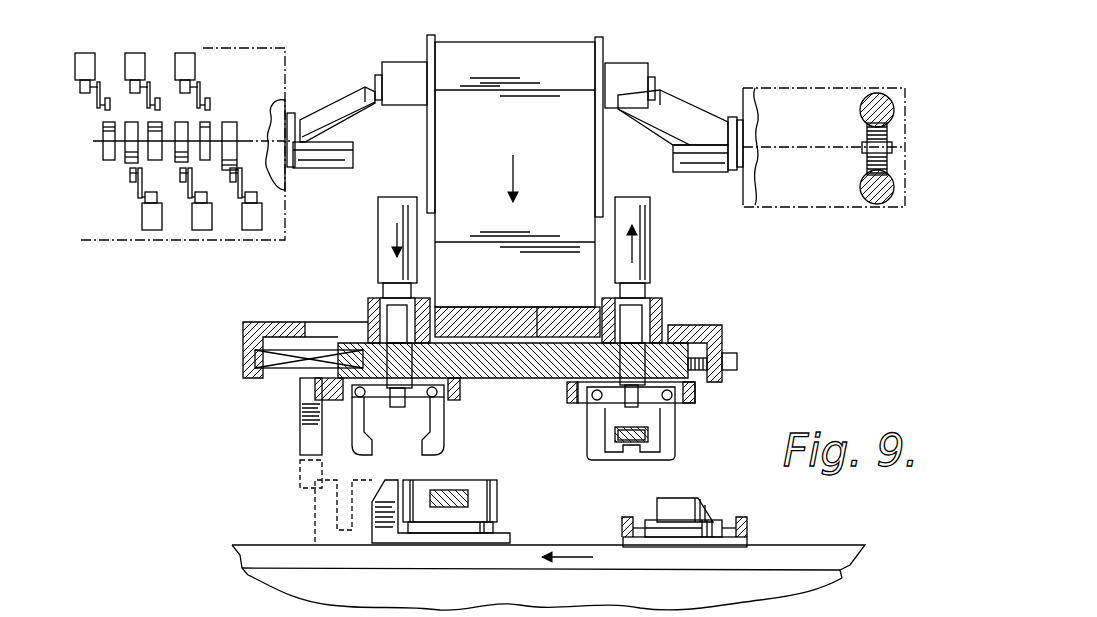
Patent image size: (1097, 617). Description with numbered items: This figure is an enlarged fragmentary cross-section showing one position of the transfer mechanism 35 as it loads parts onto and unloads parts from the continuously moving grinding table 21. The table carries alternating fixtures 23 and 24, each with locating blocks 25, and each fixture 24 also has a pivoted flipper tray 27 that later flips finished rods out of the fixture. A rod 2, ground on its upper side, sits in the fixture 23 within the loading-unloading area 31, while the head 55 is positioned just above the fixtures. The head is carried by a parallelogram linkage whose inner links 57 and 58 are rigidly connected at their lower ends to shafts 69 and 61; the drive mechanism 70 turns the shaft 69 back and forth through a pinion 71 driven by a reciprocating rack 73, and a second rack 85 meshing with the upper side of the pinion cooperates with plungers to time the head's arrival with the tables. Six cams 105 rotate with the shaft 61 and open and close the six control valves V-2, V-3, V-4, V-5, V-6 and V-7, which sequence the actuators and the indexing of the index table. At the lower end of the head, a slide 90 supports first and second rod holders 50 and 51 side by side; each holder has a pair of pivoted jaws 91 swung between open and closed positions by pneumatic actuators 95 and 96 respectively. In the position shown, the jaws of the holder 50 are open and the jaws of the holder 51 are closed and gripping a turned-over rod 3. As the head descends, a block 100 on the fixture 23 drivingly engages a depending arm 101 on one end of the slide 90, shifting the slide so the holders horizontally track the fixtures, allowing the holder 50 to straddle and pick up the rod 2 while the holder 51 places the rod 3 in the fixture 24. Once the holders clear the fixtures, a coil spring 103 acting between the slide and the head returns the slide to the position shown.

The control valve V-2 is at (83, 53).
The control valve V-4 is at (135, 53).
The control valve V-6 is at (185, 53).
The control valve V-3 is at (151, 230).
The control valve V-5 is at (201, 230).
The control valve V-7 is at (252, 230).
The cams 105 is at (205, 122).
The shaft 61 is at (243, 140).
The head 55 is at (520, 136).
The inner link 58 is at (372, 133).
The inner link 57 is at (670, 138).
The drive mechanism 70 is at (845, 124).
The rack 85 is at (888, 102).
The pinion 71 is at (890, 135).
The rack 73 is at (892, 183).
The shaft 69 is at (783, 148).
The pneumatic actuator 95 is at (380, 242).
The pneumatic actuator 96 is at (650, 233).
The slide 90 is at (543, 350).
The transfer mechanism 35 is at (708, 313).
The coil spring 103 is at (275, 372).
The depending arm 101 is at (302, 420).
The rod holder 50 is at (476, 433).
The jaws 91 is at (444, 425).
The rod holder 51 is at (690, 413).
The rod 3 is at (650, 433).
The rod 2 is at (558, 484).
The loading-unloading area 31 is at (558, 455).
The fixture 23 is at (508, 493).
The locating blocks 25 is at (500, 522).
The fixture 24 is at (711, 515).
The flipper tray 27 is at (747, 530).
The grinding table 21 is at (832, 545).
The block 100 is at (372, 512).